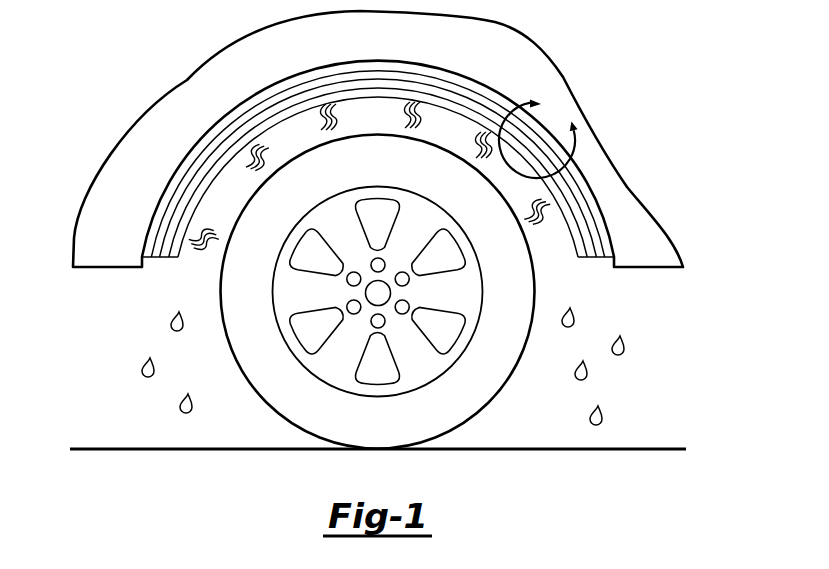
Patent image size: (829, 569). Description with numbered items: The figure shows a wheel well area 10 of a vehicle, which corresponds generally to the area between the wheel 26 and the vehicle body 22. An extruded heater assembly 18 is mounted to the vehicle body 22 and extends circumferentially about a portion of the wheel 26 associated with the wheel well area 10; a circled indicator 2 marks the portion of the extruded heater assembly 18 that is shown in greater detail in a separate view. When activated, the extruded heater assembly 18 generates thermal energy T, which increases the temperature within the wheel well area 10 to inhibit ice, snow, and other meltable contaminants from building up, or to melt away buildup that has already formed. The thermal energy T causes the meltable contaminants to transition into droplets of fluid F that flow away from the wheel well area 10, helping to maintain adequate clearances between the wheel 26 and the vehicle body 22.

The wheel well area 10 is at (428, 194).
The extruded heater assembly 18 is at (596, 212).
The vehicle body 22 is at (517, 50).
The wheel 26 is at (470, 388).
The section view indicator for FIG. 2 is at (538, 134).
The thermal energy T is at (240, 151).
The droplets of fluid F is at (170, 322).